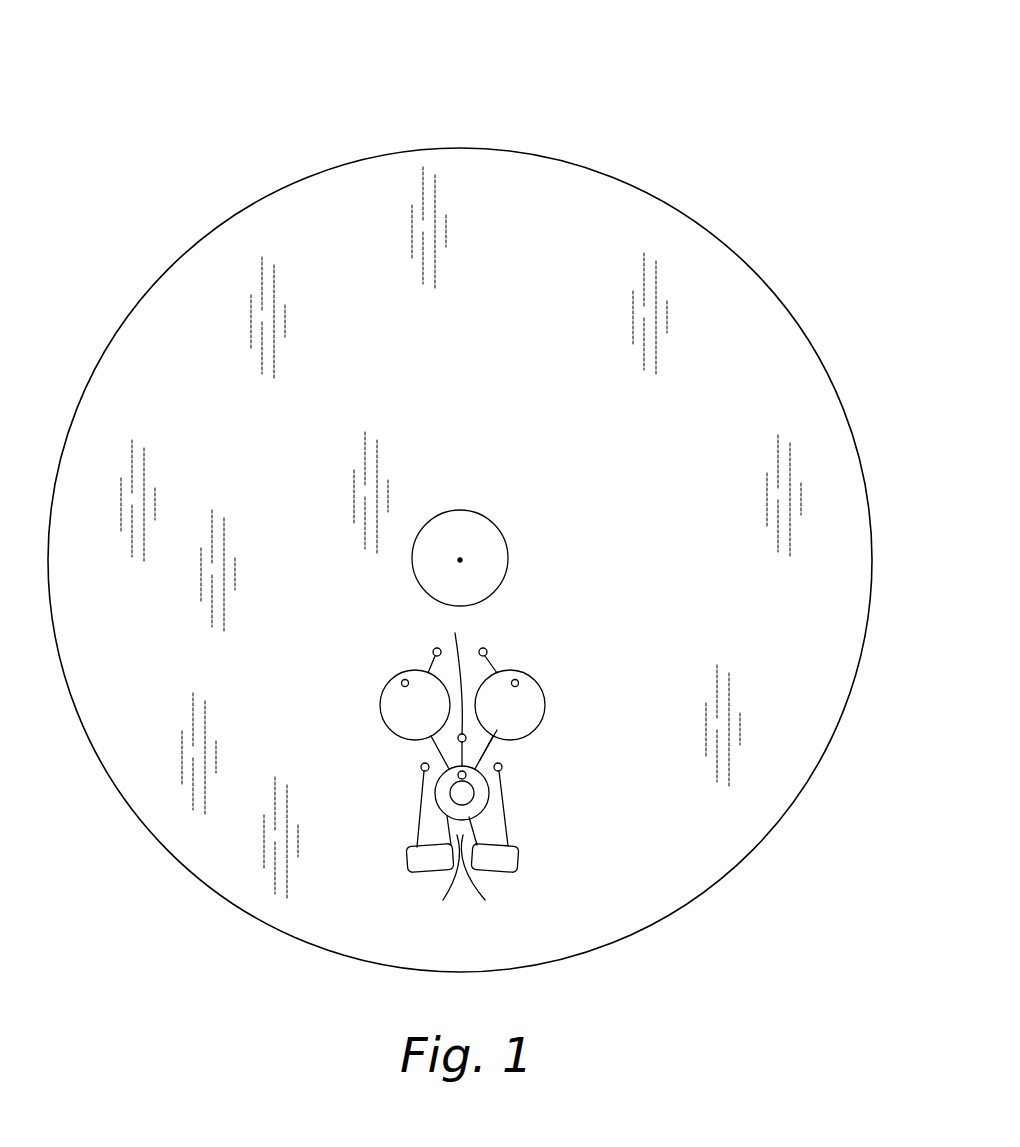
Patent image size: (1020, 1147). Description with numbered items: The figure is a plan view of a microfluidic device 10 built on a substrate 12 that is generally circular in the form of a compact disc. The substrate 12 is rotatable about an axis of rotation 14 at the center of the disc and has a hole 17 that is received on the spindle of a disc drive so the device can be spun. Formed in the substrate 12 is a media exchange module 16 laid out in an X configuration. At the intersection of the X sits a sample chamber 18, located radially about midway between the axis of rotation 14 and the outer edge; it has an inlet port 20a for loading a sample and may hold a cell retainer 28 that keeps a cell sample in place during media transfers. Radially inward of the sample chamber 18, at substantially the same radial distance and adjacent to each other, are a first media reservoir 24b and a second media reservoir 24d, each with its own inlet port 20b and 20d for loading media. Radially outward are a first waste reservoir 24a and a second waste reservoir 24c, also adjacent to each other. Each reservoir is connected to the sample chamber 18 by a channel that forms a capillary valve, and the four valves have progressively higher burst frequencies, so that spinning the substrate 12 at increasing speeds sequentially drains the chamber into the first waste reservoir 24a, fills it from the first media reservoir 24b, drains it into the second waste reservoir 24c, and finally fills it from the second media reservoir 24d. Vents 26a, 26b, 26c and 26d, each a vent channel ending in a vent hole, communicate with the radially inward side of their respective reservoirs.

The microfluidic device 10 is at (684, 96).
The substrate 12 is at (787, 335).
The axis of rotation 14 is at (460, 560).
The media exchange module 16 is at (473, 767).
The hole 17 is at (473, 527).
The sample chamber 18 is at (489, 795).
The inlet port 20a is at (458, 773).
The inlet port 20b is at (402, 682).
The inlet port 20d is at (518, 682).
The first waste reservoir 24a is at (407, 858).
The first media reservoir 24b is at (386, 722).
The second waste reservoir 24c is at (518, 858).
The second media reservoir 24d is at (545, 715).
The vent 26a is at (421, 809).
The vent 26b is at (430, 667).
The vent 26c is at (510, 833).
The vent 26d is at (492, 663).
The cell retainer 28 is at (472, 803).